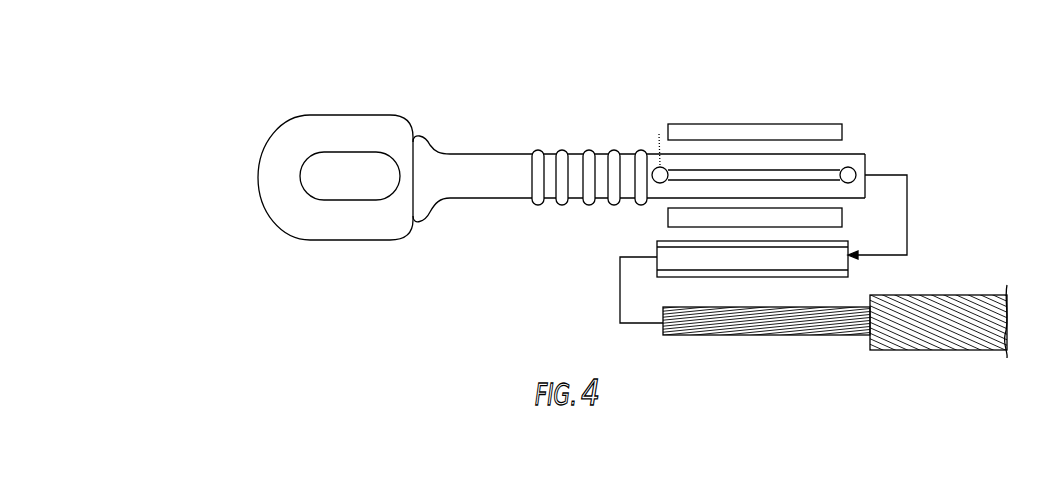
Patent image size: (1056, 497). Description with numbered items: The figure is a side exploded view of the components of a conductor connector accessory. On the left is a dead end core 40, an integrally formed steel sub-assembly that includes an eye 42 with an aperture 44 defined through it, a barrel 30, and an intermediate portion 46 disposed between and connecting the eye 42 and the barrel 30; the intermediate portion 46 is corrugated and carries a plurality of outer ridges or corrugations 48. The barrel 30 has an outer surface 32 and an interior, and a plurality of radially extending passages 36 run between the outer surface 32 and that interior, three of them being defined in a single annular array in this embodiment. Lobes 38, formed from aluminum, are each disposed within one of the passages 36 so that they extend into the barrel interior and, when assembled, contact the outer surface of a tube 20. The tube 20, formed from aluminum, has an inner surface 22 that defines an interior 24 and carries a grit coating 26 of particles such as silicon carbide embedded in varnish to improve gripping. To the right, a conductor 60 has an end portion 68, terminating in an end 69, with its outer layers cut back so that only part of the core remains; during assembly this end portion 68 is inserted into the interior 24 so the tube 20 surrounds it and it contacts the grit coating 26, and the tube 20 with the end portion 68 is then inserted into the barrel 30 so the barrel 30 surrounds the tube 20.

The tube 20 is at (809, 276).
The inner surface 22 is at (727, 272).
The interior 24 is at (855, 262).
The grit coating 26 is at (657, 262).
The barrel 30 is at (862, 138).
The outer surface 32 is at (797, 158).
The passages 36 is at (660, 190).
The lobes 38 is at (712, 172).
The dead end core 40 is at (556, 43).
The eye 42 is at (327, 212).
The aperture 44 is at (368, 190).
The intermediate portion 46 is at (480, 168).
The corrugations 48 is at (562, 153).
The conductor 60 is at (879, 357).
The end portion 68 is at (762, 345).
The end 69 is at (653, 332).